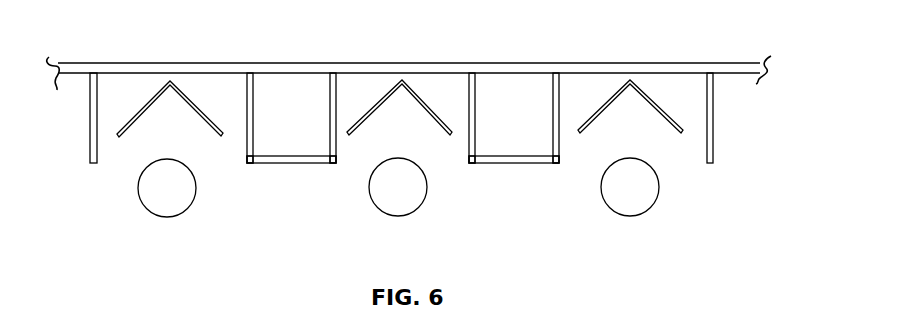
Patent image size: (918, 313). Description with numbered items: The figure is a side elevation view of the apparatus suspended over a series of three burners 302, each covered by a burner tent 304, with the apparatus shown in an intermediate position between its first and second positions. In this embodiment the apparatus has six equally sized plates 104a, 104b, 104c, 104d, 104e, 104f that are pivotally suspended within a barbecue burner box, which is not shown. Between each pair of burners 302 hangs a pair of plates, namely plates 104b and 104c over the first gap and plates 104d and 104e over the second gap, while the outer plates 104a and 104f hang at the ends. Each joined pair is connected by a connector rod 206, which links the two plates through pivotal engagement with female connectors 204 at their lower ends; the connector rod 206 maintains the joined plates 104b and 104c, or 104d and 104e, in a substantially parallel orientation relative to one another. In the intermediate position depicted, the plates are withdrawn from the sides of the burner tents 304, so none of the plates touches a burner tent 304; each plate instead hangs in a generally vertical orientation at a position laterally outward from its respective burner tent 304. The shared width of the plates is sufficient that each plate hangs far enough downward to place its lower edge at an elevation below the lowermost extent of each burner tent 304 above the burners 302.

The plate 104a is at (93, 108).
The plate 104b is at (255, 98).
The plate 104c is at (335, 92).
The plate 104d is at (475, 97).
The plate 104e is at (560, 92).
The plate 104f is at (712, 92).
The female connector 204 is at (253, 163).
The connector rod 206 is at (290, 157).
The burner 302 is at (165, 193).
The burner tent 304 is at (155, 103).